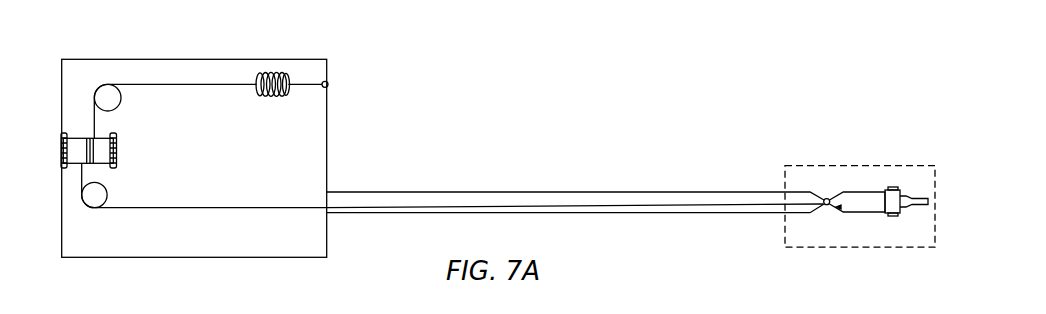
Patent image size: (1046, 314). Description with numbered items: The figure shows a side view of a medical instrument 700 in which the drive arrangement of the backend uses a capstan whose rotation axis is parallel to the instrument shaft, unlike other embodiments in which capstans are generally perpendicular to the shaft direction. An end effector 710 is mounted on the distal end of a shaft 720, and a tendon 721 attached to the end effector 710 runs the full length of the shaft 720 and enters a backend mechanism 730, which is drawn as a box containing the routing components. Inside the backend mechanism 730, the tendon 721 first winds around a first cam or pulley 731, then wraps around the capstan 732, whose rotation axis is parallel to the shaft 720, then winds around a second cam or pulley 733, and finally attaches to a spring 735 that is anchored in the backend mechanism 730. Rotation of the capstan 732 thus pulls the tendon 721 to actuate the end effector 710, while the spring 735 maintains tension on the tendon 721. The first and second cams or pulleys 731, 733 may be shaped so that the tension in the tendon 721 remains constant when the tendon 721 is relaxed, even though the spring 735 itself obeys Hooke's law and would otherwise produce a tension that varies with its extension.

The medical instrument 700 is at (744, 90).
The end effector 710 is at (873, 240).
The shaft 720 is at (575, 193).
The tendon 721 is at (692, 209).
The backend mechanism 730 is at (292, 170).
The first cam or pulley 731 is at (110, 192).
The capstan 732 is at (118, 157).
The second cam or pulley 733 is at (119, 98).
The spring 735 is at (272, 97).